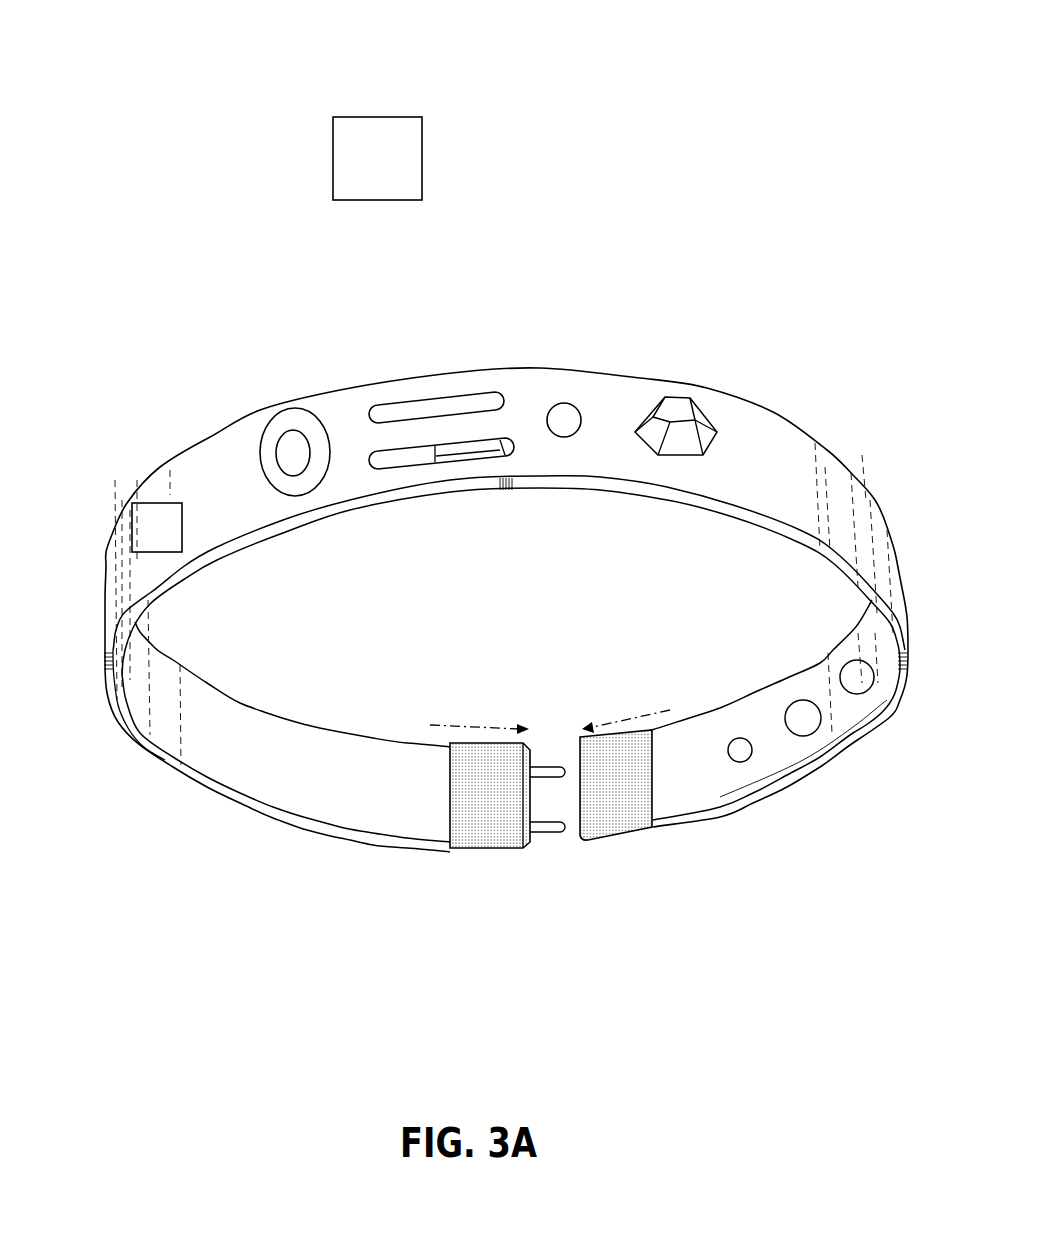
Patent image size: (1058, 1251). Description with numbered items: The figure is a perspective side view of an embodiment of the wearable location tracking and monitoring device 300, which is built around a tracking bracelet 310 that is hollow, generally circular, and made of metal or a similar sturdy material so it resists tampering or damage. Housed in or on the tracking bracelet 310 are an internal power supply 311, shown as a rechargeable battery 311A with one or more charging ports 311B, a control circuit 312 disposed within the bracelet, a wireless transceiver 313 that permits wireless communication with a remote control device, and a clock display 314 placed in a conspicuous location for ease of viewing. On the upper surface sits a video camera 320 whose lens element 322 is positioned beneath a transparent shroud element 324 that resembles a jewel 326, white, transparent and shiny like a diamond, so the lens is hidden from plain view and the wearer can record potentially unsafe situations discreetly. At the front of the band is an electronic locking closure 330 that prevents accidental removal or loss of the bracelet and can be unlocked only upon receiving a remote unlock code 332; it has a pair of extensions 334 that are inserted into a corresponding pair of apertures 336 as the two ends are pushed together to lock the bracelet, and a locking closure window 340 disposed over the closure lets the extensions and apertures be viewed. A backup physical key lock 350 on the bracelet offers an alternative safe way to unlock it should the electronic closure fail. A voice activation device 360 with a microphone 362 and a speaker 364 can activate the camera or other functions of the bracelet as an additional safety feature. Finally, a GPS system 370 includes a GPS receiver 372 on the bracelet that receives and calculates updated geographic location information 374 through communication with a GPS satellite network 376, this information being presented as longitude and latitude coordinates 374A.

The wearable location tracking and monitoring device 300 is at (126, 98).
The tracking bracelet 310 is at (774, 285).
The internal power supply 311 is at (817, 727).
The rechargeable battery 311A is at (815, 733).
The charging ports 311B is at (740, 763).
The control circuit 312 is at (872, 677).
The wireless transceiver 313 is at (567, 400).
The clock display 314 is at (147, 553).
The video camera 320 is at (692, 376).
The lens element 322 is at (702, 422).
The transparent shroud element 324 is at (664, 397).
The jewel 326 is at (652, 398).
The electronic locking closure 330 is at (485, 800).
The remote unlock code 332 is at (463, 743).
The pair of extensions 334 is at (533, 834).
The pair of apertures 336 is at (582, 752).
The locking closure window 340 is at (635, 815).
The backup physical key lock 350 is at (343, 800).
The voice activation device 360 is at (248, 458).
The microphone 362 is at (277, 444).
The speaker 364 is at (270, 414).
The GPS system 370 is at (386, 400).
The GPS receiver 372 is at (437, 450).
The updated geographic location information 374 is at (447, 453).
The longitude and latitude coordinates 374A is at (503, 450).
The GPS satellite network 376 is at (397, 188).